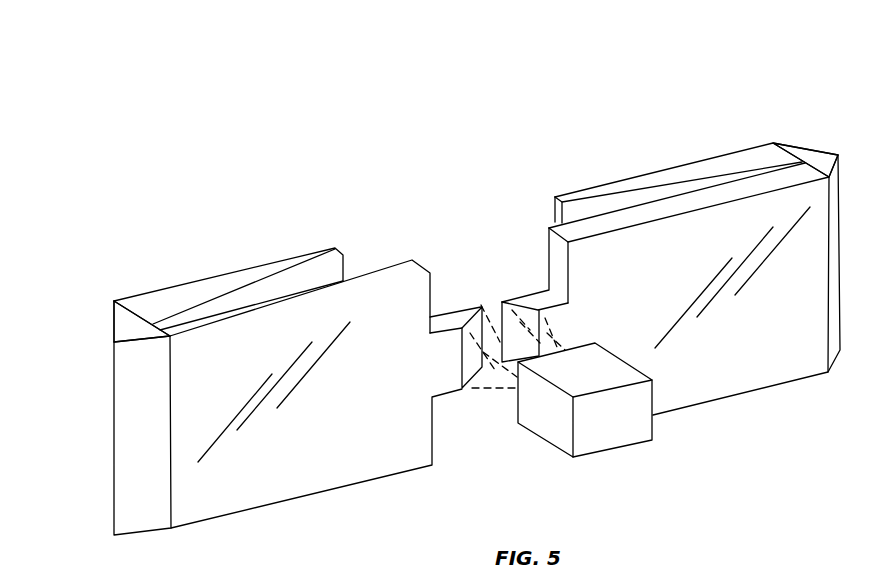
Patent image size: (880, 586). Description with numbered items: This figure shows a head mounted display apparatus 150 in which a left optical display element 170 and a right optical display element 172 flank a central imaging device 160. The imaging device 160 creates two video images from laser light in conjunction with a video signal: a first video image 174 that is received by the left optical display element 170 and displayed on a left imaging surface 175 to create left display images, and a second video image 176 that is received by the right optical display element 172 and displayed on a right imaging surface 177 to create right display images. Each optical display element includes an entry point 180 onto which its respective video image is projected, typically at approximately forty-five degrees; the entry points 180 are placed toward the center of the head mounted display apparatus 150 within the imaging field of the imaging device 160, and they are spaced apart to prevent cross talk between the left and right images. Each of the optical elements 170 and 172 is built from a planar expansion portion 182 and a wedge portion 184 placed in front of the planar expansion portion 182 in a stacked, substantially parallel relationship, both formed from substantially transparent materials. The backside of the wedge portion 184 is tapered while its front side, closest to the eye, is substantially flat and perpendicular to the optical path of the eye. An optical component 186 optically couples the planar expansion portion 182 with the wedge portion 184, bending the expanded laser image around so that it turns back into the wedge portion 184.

The head mounted display apparatus 150 is at (430, 177).
The imaging device 160 is at (605, 438).
The left optical display element 170 is at (155, 262).
The right optical display element 172 is at (717, 107).
The first video image 174 is at (492, 383).
The left imaging surface 175 is at (265, 260).
The second video image 176 is at (550, 332).
The right imaging surface 177 is at (598, 186).
The entry point 180 is at (477, 312).
The planar expansion portion 182 is at (293, 498).
The wedge portion 184 is at (203, 290).
The optical component 186 is at (122, 325).